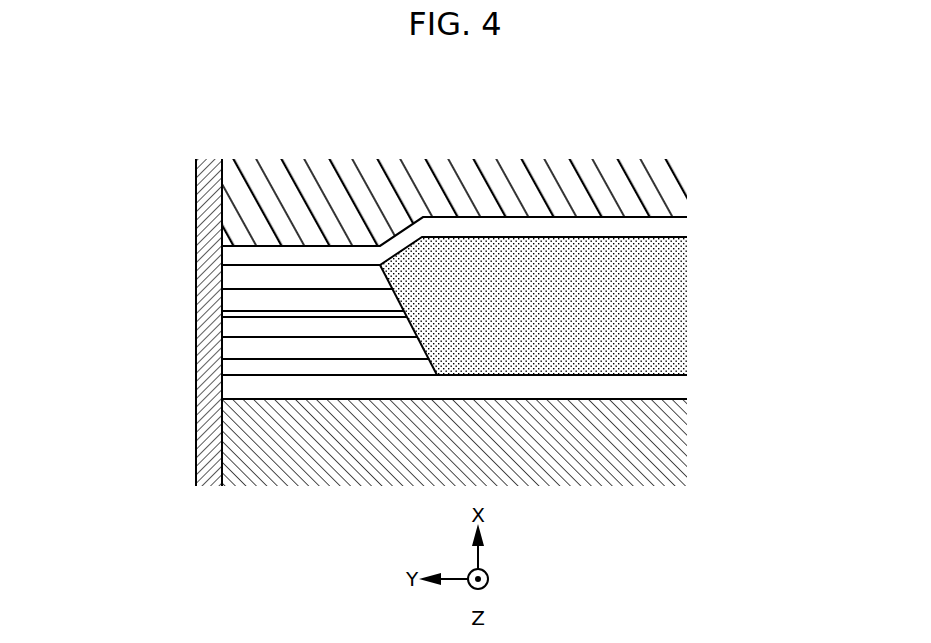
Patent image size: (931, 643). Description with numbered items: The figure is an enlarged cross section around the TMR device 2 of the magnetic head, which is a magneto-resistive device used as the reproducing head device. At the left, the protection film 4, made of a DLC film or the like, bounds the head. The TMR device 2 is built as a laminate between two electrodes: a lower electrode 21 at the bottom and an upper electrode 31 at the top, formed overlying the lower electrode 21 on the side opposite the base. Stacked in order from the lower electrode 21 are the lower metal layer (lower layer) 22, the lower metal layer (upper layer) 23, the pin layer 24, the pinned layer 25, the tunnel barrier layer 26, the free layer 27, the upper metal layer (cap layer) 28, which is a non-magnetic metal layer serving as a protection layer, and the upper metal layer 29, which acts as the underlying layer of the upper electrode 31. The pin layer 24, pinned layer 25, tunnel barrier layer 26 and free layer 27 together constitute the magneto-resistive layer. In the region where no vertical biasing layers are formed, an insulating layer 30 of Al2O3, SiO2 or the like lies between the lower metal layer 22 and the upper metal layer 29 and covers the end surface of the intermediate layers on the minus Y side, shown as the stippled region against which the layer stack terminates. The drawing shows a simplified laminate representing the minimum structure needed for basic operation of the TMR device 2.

The TMR device 2 is at (306, 295).
The protection film 4 is at (203, 445).
The lower electrode 21 is at (652, 438).
The lower metal layer (lower layer) 22 is at (236, 386).
The lower metal layer (upper layer) 23 is at (236, 366).
The pin layer 24 is at (236, 347).
The pinned layer 25 is at (236, 326).
The tunnel barrier layer 26 is at (236, 313).
The free layer 27 is at (236, 300).
The upper metal layer (cap layer) 28 is at (236, 277).
The upper metal layer 29 is at (236, 254).
The insulating layer 30 is at (652, 305).
The upper electrode 31 is at (553, 190).